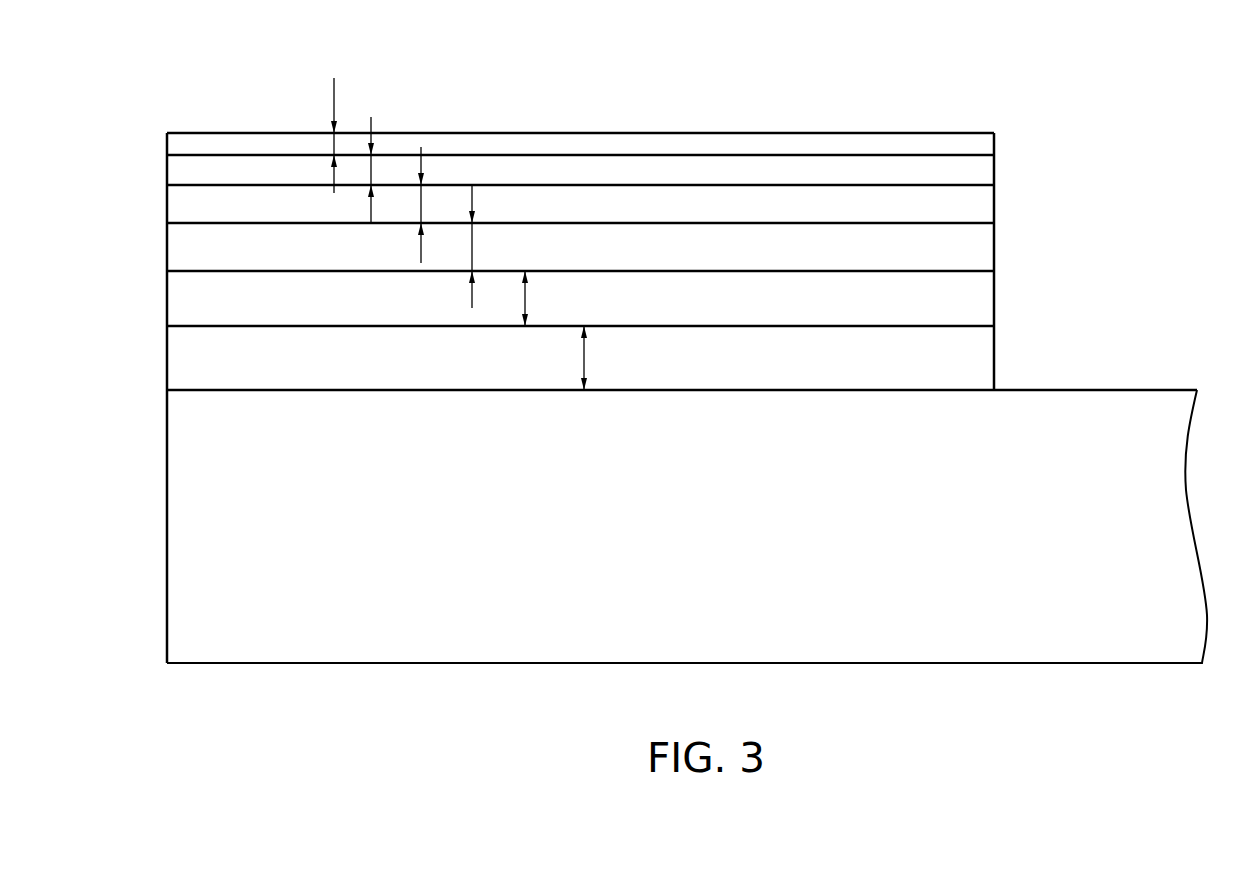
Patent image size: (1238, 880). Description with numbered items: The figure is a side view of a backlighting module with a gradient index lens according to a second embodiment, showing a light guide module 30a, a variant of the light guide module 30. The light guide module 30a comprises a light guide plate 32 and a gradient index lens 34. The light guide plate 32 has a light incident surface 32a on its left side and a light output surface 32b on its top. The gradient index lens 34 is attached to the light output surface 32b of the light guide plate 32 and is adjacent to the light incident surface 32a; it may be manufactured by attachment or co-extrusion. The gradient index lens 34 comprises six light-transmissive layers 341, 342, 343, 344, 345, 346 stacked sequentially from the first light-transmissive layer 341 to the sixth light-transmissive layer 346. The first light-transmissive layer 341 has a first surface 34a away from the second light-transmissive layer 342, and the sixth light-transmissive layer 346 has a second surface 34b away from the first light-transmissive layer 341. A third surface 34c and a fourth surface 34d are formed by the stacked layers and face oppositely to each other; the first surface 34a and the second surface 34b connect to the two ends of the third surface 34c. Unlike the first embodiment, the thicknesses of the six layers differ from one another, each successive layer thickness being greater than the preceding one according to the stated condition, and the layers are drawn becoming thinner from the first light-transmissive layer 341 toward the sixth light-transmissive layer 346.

The light guide module 30 is at (1128, 176).
The light guide module 30a is at (191, 60).
The light guide plate 32 is at (638, 527).
The light incident surface 32a is at (156, 542).
The light output surface 32b is at (1123, 380).
The gradient index lens 34 is at (872, 100).
The first surface 34a is at (503, 402).
The second surface 34b is at (567, 123).
The third surface 34c is at (156, 202).
The fourth surface 34d is at (1006, 138).
The first light-transmissive layer 341 is at (618, 407).
The second light-transmissive layer 342 is at (987, 298).
The third light-transmissive layer 343 is at (987, 246).
The fourth light-transmissive layer 344 is at (987, 205).
The fifth light-transmissive layer 345 is at (987, 177).
The sixth light-transmissive layer 346 is at (618, 108).